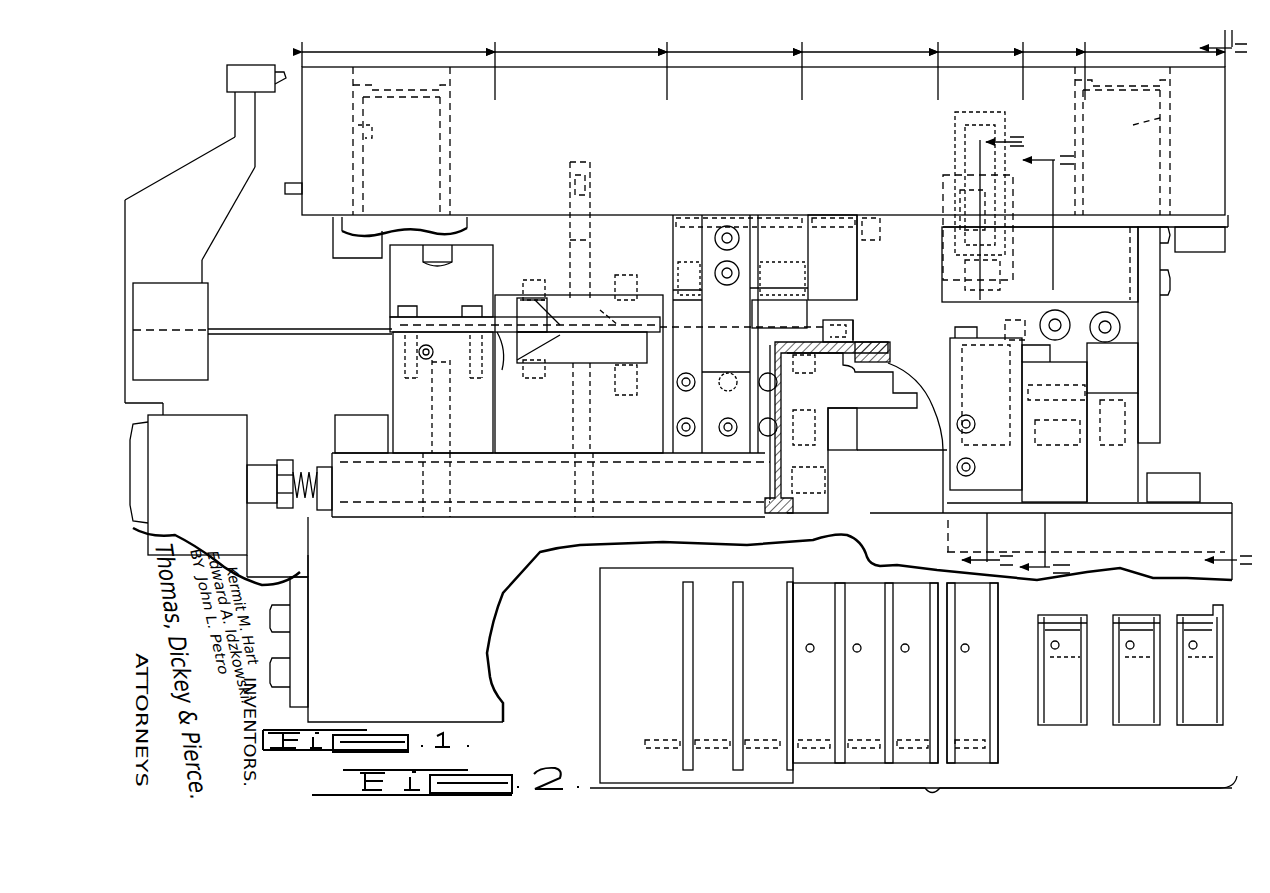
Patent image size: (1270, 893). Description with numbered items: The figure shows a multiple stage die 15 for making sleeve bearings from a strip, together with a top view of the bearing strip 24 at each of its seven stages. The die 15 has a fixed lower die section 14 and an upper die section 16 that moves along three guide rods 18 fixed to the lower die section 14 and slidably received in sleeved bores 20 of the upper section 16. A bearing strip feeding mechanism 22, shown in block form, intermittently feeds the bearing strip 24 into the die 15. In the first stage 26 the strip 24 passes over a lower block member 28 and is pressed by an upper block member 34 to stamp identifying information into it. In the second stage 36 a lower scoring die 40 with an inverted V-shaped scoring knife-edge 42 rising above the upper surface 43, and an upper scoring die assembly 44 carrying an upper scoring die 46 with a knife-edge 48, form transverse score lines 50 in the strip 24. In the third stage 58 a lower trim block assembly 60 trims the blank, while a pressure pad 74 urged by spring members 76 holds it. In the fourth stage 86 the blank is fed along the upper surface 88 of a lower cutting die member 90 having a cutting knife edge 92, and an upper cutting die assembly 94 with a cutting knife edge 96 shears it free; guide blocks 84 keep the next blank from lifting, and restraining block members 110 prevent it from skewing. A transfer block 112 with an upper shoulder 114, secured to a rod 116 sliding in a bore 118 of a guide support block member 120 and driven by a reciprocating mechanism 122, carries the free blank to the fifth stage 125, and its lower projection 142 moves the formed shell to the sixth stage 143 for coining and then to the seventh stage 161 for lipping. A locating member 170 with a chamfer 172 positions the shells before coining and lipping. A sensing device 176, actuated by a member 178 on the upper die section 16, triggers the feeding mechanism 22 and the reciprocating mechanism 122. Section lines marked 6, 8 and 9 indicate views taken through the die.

In FIG. 1, the lower die section 14 is at (326, 455).
In FIG. 1, the multiple stage die 15 is at (360, 296).
In FIG. 1, the upper die section 16 is at (302, 197).
In FIG. 1, the guide rods 18 is at (351, 110).
In FIG. 1, the sleeved bores 20 is at (357, 128).
In FIG. 1, the bearing strip feeding mechanism 22 is at (165, 282).
In FIG. 1, the bearing strip 24 is at (222, 328).
In FIG. 2, the bearing strip 24 is at (598, 610).
In FIG. 1, the first stage 26 is at (398, 70).
In FIG. 1, the lower block member 28 is at (392, 378).
In FIG. 1, the upper block member 34 is at (402, 275).
In FIG. 1, the second stage 36 is at (581, 70).
In FIG. 1, the lower scoring die 40 is at (610, 352).
In FIG. 1, the scoring knife-edge 42 is at (598, 343).
In FIG. 1, the upper surface 43 is at (509, 361).
In FIG. 1, the upper scoring die assembly 44 is at (525, 217).
In FIG. 1, the upper scoring die 46 is at (552, 296).
In FIG. 1, the scoring knife-edge 48 is at (598, 313).
In FIG. 2, the score line 50 is at (683, 597).
In FIG. 1, the third stage 58 is at (734, 70).
In FIG. 1, the lower trim block assembly 60 is at (727, 448).
In FIG. 1, the pressure pad 74 is at (825, 295).
In FIG. 1, the spring members 76 is at (660, 295).
In FIG. 1, the guide blocks 84 is at (853, 335).
In FIG. 1, the fourth stage 86 is at (870, 70).
In FIG. 1, the upper surface 88 is at (770, 332).
In FIG. 1, the lower cutting die member 90 is at (810, 337).
In FIG. 1, the cutting knife edge 92 is at (853, 330).
In FIG. 1, the upper cutting die assembly 94 is at (883, 220).
In FIG. 1, the cutting knife edge 96 is at (882, 355).
In FIG. 1, the restraining block members 110 is at (956, 388).
In FIG. 1, the transfer block 112 is at (883, 405).
In FIG. 1, the upper shoulder 114 is at (825, 385).
In FIG. 1, the rod 116 is at (780, 495).
In FIG. 1, the bore 118 is at (765, 487).
In FIG. 1, the guide support block member 120 is at (710, 502).
In FIG. 1, the reciprocating mechanism 122 is at (218, 423).
In FIG. 1, the fifth stage 125 is at (980, 68).
In FIG. 1, the lower projection 142 is at (915, 408).
In FIG. 1, the sixth stage 143 is at (1054, 68).
In FIG. 1, the seventh stage 161 is at (1155, 48).
In FIG. 1, the locating member 170 is at (1157, 347).
In FIG. 1, the chamfer 172 is at (1140, 447).
In FIG. 1, the sensing device 176 is at (230, 85).
In FIG. 1, the member 178 is at (297, 182).
In FIG. 1, the section line 6 is at (1212, 312).
In FIG. 1, the section line 8 is at (1041, 350).
In FIG. 1, the section line 9 is at (963, 140).